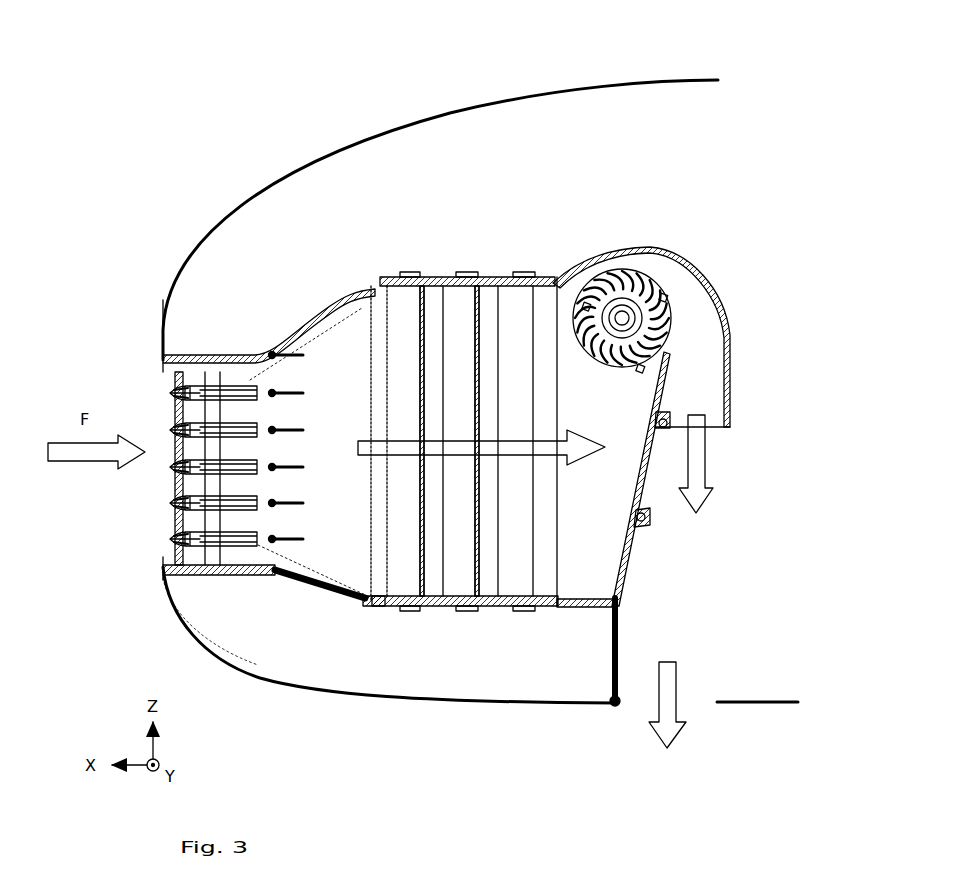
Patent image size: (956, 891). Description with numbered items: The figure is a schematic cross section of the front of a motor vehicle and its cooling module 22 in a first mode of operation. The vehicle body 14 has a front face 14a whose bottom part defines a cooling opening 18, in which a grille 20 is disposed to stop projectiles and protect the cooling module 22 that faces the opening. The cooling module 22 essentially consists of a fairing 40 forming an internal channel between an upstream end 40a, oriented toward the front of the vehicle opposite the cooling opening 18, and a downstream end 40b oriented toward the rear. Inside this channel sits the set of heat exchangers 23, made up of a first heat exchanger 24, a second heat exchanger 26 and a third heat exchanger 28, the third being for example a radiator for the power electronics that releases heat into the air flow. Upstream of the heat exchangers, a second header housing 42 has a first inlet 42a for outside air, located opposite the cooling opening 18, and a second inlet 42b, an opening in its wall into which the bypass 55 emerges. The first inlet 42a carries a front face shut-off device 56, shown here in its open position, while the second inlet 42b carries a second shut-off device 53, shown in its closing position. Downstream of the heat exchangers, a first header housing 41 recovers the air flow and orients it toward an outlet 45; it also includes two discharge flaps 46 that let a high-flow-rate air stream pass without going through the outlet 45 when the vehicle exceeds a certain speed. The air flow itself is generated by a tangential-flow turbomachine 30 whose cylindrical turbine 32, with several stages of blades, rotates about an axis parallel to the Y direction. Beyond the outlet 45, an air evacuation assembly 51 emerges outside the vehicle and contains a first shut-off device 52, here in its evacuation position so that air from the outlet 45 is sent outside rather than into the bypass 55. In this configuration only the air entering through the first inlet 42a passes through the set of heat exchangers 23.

The body 14 is at (447, 112).
The front face 14a is at (163, 295).
The cooling opening 18 is at (120, 512).
The grille 20 is at (175, 542).
The cooling module 22 is at (718, 545).
The set of heat exchangers 23 is at (441, 559).
The first heat exchanger 24 is at (460, 610).
The second heat exchanger 26 is at (520, 608).
The third heat exchanger 28 is at (400, 610).
The tangential-flow turbomachine 30 is at (692, 266).
The turbine 32 is at (590, 268).
The fairing 40 is at (460, 277).
The upstream end 40a is at (372, 300).
The downstream end 40b is at (551, 296).
The first header housing 41 is at (705, 268).
The second header housing 42 is at (308, 313).
The first inlet 42a is at (185, 378).
The second inlet 42b is at (315, 600).
The outlet 45 is at (713, 430).
The discharge flap 46 is at (617, 558).
The air evacuation assembly 51 is at (690, 712).
The first shut-off device 52 is at (615, 708).
The second shut-off device 53 is at (275, 578).
The bypass 55 is at (335, 652).
The front face shut-off device 56 is at (283, 350).